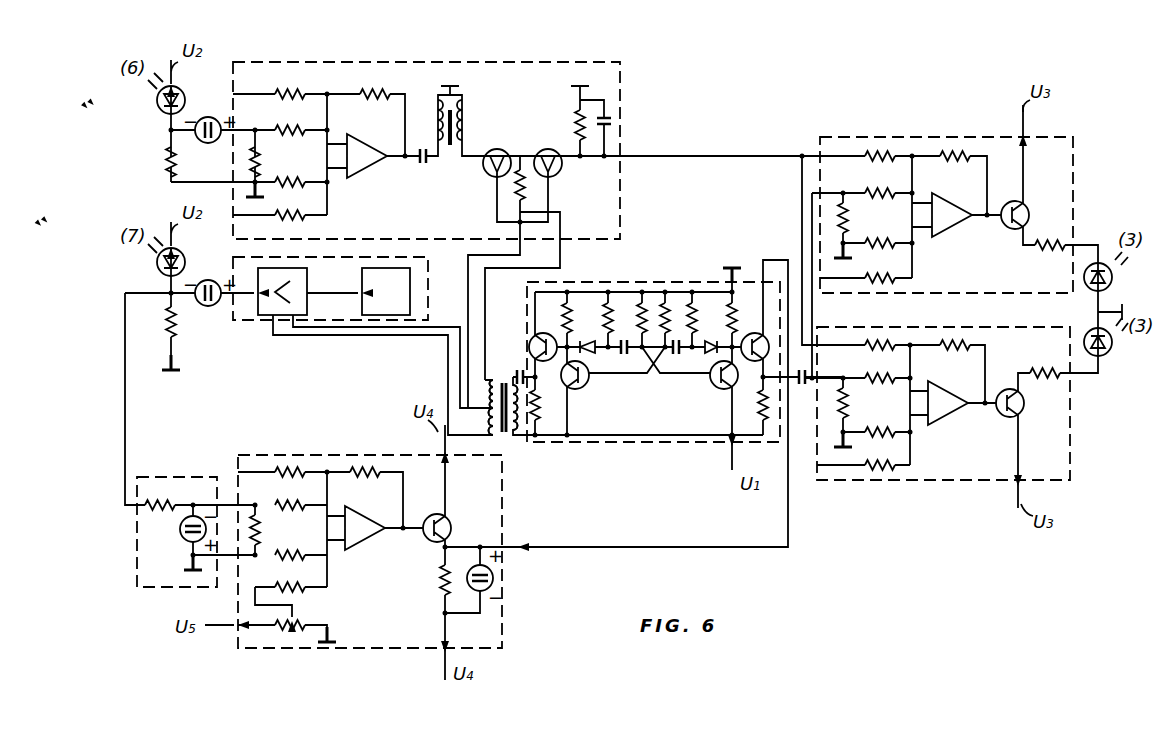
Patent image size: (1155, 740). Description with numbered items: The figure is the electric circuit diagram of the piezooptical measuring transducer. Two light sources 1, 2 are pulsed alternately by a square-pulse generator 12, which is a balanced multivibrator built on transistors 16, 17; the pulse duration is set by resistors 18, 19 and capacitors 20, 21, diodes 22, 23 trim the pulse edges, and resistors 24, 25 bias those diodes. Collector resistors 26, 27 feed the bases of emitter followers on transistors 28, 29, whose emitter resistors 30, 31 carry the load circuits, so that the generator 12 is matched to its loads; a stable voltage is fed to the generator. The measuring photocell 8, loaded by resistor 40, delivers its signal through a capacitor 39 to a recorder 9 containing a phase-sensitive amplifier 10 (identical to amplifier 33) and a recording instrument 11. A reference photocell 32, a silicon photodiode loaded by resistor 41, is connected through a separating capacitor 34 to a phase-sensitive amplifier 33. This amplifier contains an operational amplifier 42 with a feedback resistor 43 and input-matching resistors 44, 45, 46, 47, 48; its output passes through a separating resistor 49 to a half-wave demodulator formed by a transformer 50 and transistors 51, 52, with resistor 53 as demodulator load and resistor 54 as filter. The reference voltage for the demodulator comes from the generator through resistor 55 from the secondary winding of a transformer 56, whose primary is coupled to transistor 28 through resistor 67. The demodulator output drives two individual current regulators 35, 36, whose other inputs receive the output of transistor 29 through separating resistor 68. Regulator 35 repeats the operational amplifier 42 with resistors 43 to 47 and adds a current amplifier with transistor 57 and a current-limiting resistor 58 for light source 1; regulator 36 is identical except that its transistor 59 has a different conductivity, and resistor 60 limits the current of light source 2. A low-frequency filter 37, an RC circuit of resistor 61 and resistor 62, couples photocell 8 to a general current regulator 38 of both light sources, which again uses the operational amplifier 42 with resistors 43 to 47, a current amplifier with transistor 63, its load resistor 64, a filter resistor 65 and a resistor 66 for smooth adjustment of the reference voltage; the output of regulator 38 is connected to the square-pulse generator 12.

The light source 1 is at (1114, 278).
The light source 2 is at (1110, 352).
The photocell 8 is at (180, 256).
The recorder 9 is at (428, 266).
The phase-sensitive amplifier 10 is at (302, 289).
The recording instrument 11 is at (386, 291).
The square-pulse generator 12 is at (623, 279).
The transistor 16 is at (586, 388).
The transistor 17 is at (715, 388).
The resistor 18 is at (668, 310).
The resistor 19 is at (640, 316).
The capacitor 20 is at (681, 336).
The capacitor 21 is at (626, 336).
The diode 22 is at (708, 352).
The diode 23 is at (589, 336).
The resistor 24 is at (692, 316).
The resistor 25 is at (606, 316).
The collector resistor 26 is at (565, 316).
The collector resistor 27 is at (732, 316).
The transistor 28 is at (532, 338).
The transistor 29 is at (755, 362).
The emitter resistor 30 is at (548, 405).
The emitter resistor 31 is at (760, 410).
The reference photocell 32 is at (182, 93).
The phase-sensitive amplifier 33 is at (525, 61).
The separating capacitor 34 is at (205, 144).
The individual current regulator 35 is at (1057, 134).
The individual current regulator 36 is at (1078, 431).
The low-frequency filter 37 is at (185, 472).
The general current regulator 38 is at (510, 503).
The capacitor 39 is at (208, 306).
The resistor 40 is at (165, 322).
The resistor 41 is at (163, 153).
The operational amplifier 42 is at (362, 144).
The resistor 43 is at (385, 87).
The resistor 44 is at (293, 87).
The resistor 45 is at (303, 124).
The resistor 46 is at (298, 181).
The resistor 47 is at (298, 214).
The resistor 48 is at (259, 154).
The separating resistor 49 is at (420, 160).
The transformer 50 is at (446, 158).
The transistor 51 is at (495, 147).
The transistor 52 is at (545, 147).
The resistor 53 is at (578, 125).
The resistor 54 is at (612, 124).
The resistor 55 is at (515, 190).
The transformer 56 is at (512, 437).
The transistor 57 is at (1025, 205).
The resistor 58 is at (1043, 250).
The transistor 59 is at (1028, 412).
The resistor 60 is at (1050, 368).
The resistor 61 is at (175, 502).
The resistor 62 is at (180, 534).
The transistor 63 is at (448, 520).
The resistor 64 is at (438, 582).
The resistor 65 is at (495, 580).
The resistor 66 is at (280, 630).
The resistor 67 is at (520, 370).
The separating resistor 68 is at (803, 386).